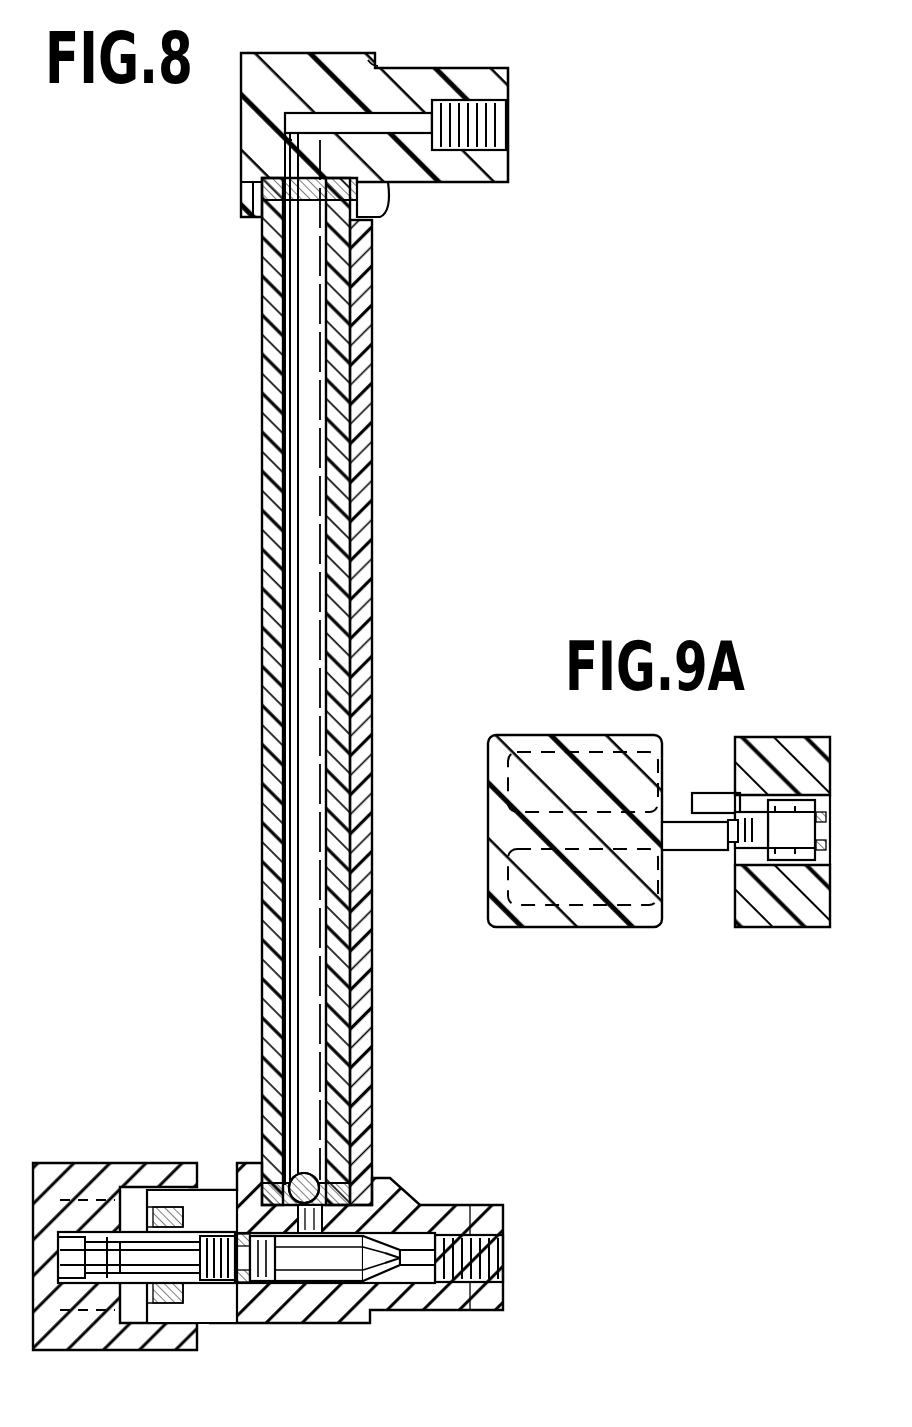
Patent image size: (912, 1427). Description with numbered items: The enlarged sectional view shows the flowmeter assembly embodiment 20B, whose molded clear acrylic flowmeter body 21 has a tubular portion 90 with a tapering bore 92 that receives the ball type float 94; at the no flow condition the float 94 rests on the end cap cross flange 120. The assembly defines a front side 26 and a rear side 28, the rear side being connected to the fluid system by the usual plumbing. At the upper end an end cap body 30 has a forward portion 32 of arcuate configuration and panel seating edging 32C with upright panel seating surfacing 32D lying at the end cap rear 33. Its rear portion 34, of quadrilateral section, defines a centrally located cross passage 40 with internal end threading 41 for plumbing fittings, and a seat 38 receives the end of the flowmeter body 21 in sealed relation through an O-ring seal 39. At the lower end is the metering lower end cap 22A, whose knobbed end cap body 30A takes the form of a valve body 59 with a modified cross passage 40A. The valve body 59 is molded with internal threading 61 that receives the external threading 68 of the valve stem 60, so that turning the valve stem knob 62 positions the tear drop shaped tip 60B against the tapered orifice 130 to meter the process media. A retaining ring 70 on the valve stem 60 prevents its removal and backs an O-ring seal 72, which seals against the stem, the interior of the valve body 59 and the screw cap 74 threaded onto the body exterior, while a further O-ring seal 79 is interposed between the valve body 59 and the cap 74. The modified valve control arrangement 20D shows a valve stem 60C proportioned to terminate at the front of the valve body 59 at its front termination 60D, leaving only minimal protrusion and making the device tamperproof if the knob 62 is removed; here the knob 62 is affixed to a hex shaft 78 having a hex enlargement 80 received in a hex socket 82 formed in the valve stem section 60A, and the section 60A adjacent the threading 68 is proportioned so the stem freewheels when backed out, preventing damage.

In FIG. 8, the end cap body 30 is at (282, 72).
In FIG. 8, the forward portion 32 is at (240, 128).
In FIG. 8, the panel seating edging 32C is at (380, 66).
In FIG. 8, the upright panel seating surfacing 32D is at (378, 62).
In FIG. 8, the end cap rear 33 is at (540, 112).
In FIG. 8, the rear portion 34 is at (488, 180).
In FIG. 8, the seat 38 is at (268, 222).
In FIG. 8, the O-ring seal 39 is at (265, 195).
In FIG. 8, the cross passage 40 is at (420, 160).
In FIG. 8, the internal end threading 41 is at (500, 135).
In FIG. 8, the rear side 28 is at (420, 392).
In FIG. 8, the tubular portion 90 is at (262, 578).
In FIG. 8, the tapering bore 92 is at (300, 626).
In FIG. 8, the flowmeter body 21 is at (255, 736).
In FIG. 8, the front side 26 is at (236, 852).
In FIG. 8, the flowmeter assembly embodiment 20B is at (226, 880).
In FIG. 8, the ball type float 94 is at (320, 1180).
In FIG. 8, the end cap cross flange 120 is at (320, 1232).
In FIG. 8, the cross passage 40A is at (382, 1256).
In FIG. 8, the valve body 59 is at (470, 1210).
In FIG. 9A, the valve body 59 is at (795, 742).
In FIG. 8, the knobbed end cap body 30A is at (486, 1206).
In FIG. 8, the valve stem 60 is at (315, 1262).
In FIG. 8, the tear drop shaped tip 60B is at (348, 1262).
In FIG. 8, the tapered orifice 130 is at (392, 1262).
In FIG. 8, the internal threading 61 is at (264, 1283).
In FIG. 8, the valve stem external threading 68 is at (240, 1284).
In FIG. 9A, the valve stem external threading 68 is at (828, 842).
In FIG. 8, the screw cap 74 is at (215, 1188).
In FIG. 9A, the screw cap 74 is at (782, 928).
In FIG. 8, the O-ring seal 79 is at (163, 1226).
In FIG. 8, the retaining ring 70 is at (177, 1258).
In FIG. 8, the O-ring seal 72 is at (129, 1257).
In FIG. 8, the lower end cap 22A is at (44, 1363).
In FIG. 9A, the valve stem knob 62 is at (538, 735).
In FIG. 9A, the hex shaft 78 is at (683, 830).
In FIG. 9A, the valve stem front termination 60D is at (710, 795).
In FIG. 9A, the valve stem section 60A is at (806, 796).
In FIG. 9A, the valve stem 60C is at (790, 832).
In FIG. 9A, the enlargement 80 is at (740, 832).
In FIG. 9A, the hex socket 82 is at (736, 852).
In FIG. 9A, the housing assembly 20D is at (780, 732).